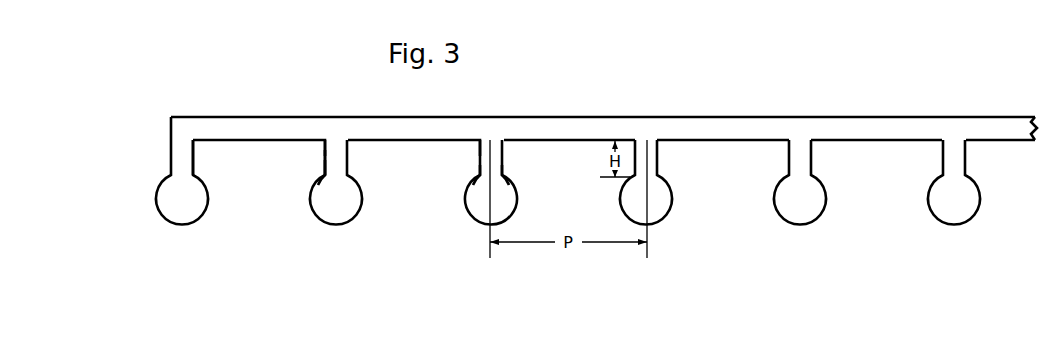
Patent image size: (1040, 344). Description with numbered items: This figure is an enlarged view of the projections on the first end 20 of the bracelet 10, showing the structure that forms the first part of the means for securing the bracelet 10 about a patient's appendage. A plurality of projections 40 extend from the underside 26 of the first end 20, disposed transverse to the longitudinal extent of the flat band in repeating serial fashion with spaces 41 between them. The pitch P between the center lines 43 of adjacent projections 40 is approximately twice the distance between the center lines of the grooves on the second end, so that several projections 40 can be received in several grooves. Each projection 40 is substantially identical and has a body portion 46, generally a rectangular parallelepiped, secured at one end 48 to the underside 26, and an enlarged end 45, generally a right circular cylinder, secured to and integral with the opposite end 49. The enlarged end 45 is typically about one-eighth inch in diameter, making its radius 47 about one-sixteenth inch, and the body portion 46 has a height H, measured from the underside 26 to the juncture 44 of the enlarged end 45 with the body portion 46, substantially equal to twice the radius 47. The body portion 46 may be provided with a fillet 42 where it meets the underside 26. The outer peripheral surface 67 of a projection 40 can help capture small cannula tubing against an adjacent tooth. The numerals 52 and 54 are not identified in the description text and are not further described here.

The bracelet 10 is at (950, 113).
The first end 20 is at (269, 131).
The underside 26 is at (998, 141).
The projections 40 is at (482, 202).
The spaces 41 is at (728, 153).
The fillet 42 is at (322, 142).
The center lines 43 is at (490, 140).
The juncture 44 is at (504, 177).
The enlarged end 45 is at (338, 212).
The body portion 46 is at (338, 167).
The radius 47 is at (185, 203).
The one end 48 is at (479, 143).
The opposite end 49 is at (480, 177).
The side wall of cutout 52 is at (196, 154).
The lower wall portion 54 is at (323, 172).
The outer peripheral surface 67 is at (808, 223).